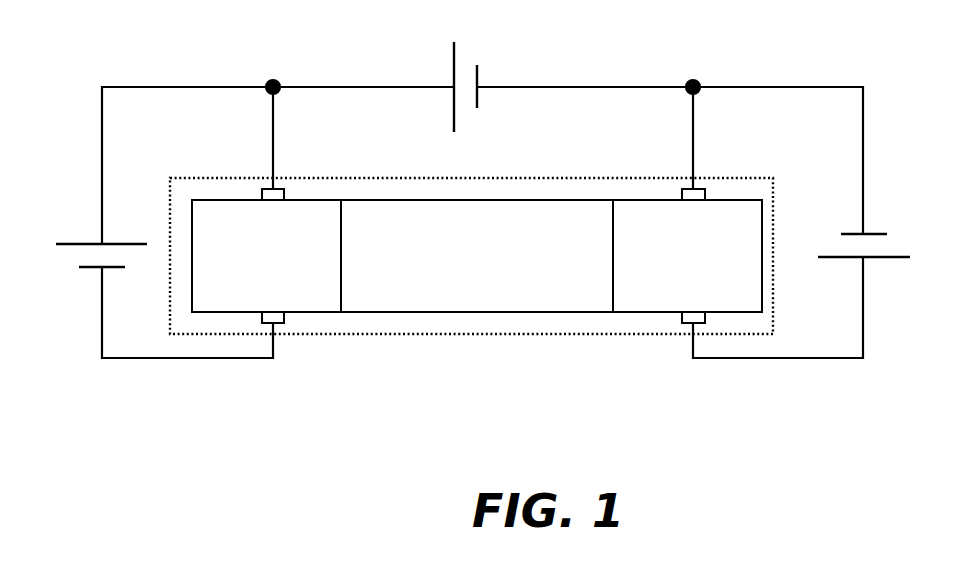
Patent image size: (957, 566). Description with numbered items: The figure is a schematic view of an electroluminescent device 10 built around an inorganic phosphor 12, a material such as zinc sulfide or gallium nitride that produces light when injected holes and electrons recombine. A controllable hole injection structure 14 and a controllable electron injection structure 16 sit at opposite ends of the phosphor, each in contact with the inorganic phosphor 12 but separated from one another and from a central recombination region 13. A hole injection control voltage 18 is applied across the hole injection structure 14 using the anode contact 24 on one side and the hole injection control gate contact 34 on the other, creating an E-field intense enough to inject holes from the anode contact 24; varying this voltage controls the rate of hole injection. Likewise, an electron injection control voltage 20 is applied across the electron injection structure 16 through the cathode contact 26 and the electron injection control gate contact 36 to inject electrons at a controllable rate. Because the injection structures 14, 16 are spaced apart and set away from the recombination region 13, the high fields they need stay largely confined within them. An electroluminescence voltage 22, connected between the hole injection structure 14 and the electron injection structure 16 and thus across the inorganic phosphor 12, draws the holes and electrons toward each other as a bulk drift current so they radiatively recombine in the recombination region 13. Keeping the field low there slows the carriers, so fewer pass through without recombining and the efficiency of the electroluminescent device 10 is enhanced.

The electroluminescent device 10 is at (455, 335).
The inorganic phosphor 12 is at (513, 199).
The recombination region 13 is at (535, 304).
The hole injection structure 14 is at (215, 200).
The electron injection structure 16 is at (727, 198).
The hole injection control voltage 18 is at (79, 256).
The electron injection control voltage 20 is at (830, 235).
The electroluminescence voltage 22 is at (466, 53).
The anode contact 24 is at (279, 189).
The cathode contact 26 is at (688, 189).
The hole injection control gate contact 34 is at (278, 323).
The electron injection control gate contact 36 is at (688, 323).